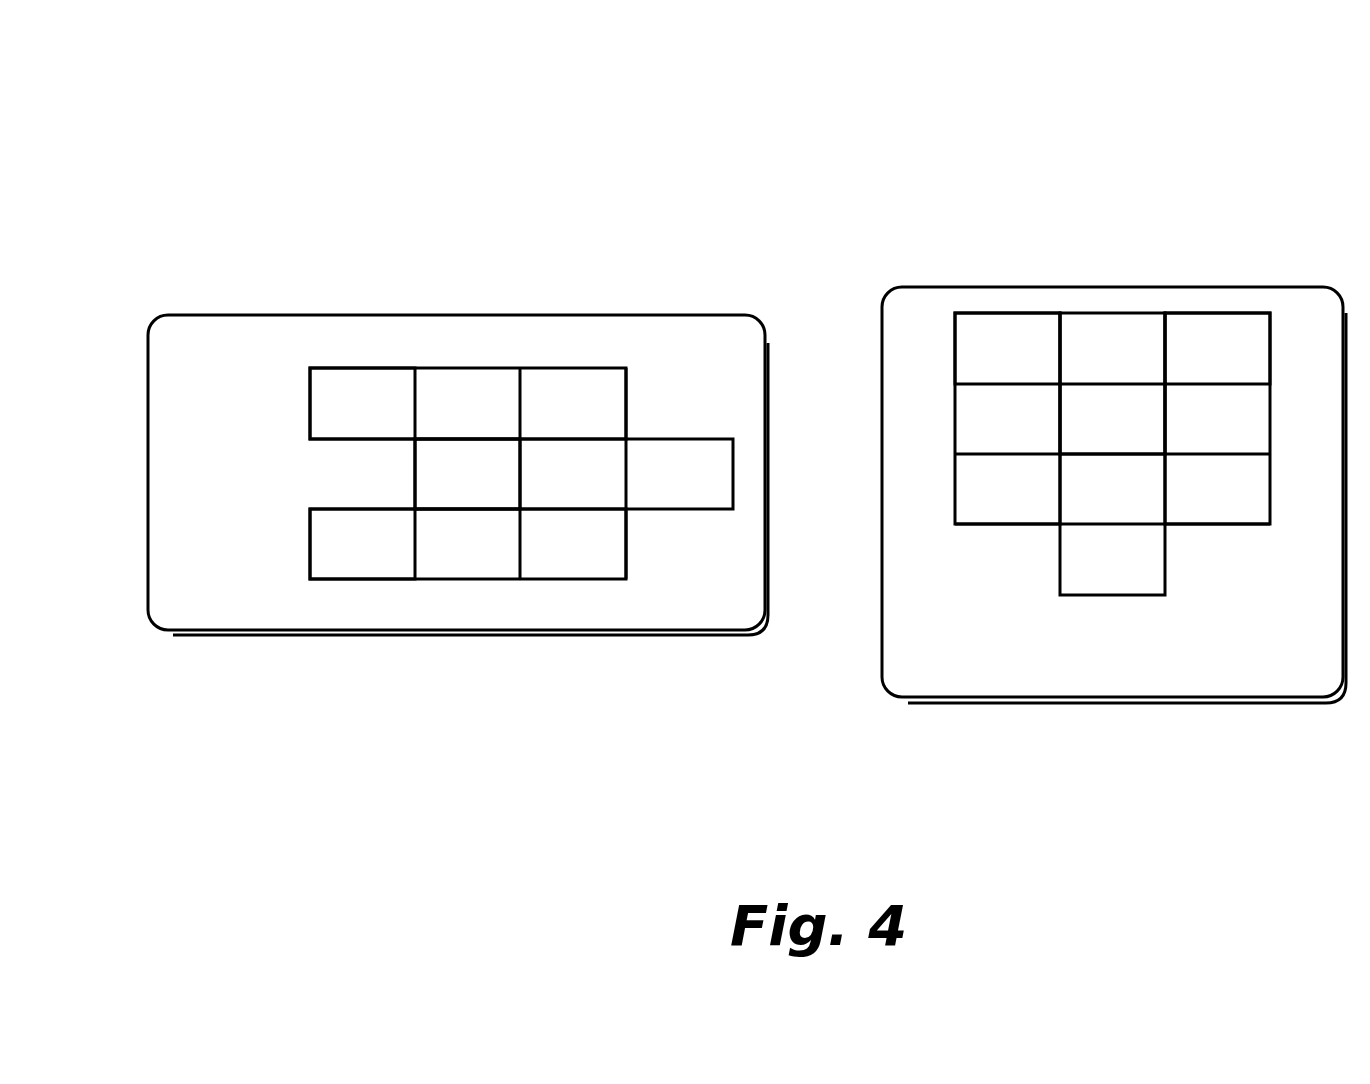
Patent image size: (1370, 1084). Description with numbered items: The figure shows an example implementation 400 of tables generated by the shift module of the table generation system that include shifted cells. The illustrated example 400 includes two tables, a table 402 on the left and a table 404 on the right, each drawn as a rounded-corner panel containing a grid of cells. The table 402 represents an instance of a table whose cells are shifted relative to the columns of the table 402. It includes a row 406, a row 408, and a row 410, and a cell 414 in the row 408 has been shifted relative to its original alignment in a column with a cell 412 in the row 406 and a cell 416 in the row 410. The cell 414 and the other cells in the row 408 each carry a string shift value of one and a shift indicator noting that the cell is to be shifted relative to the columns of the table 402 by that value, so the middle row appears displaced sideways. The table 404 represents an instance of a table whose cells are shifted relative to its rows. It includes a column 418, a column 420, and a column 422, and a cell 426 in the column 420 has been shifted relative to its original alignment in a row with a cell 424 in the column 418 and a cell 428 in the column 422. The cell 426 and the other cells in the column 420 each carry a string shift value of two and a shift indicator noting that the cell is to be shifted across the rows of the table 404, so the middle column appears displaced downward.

The example implementation 400 is at (208, 81).
The table 402 is at (455, 315).
The table 404 is at (1112, 287).
The row 406 is at (278, 404).
The row 408 is at (278, 474).
The row 410 is at (278, 544).
The cell 412 is at (362, 403).
The cell 414 is at (467, 474).
The cell 416 is at (362, 544).
The column 418 is at (1007, 552).
The column 420 is at (1113, 624).
The column 422 is at (1216, 552).
The cell 424 is at (1007, 348).
The cell 426 is at (1112, 419).
The cell 428 is at (1217, 348).